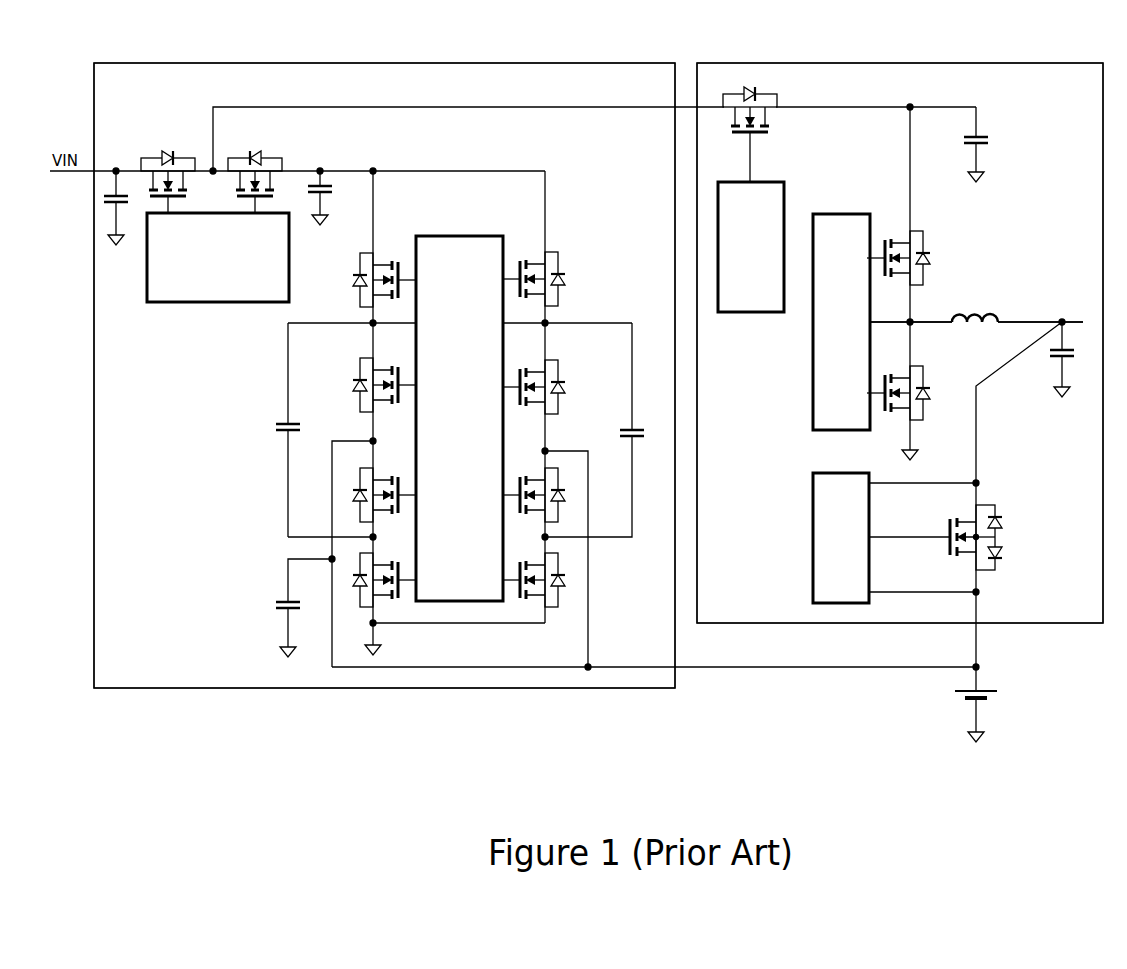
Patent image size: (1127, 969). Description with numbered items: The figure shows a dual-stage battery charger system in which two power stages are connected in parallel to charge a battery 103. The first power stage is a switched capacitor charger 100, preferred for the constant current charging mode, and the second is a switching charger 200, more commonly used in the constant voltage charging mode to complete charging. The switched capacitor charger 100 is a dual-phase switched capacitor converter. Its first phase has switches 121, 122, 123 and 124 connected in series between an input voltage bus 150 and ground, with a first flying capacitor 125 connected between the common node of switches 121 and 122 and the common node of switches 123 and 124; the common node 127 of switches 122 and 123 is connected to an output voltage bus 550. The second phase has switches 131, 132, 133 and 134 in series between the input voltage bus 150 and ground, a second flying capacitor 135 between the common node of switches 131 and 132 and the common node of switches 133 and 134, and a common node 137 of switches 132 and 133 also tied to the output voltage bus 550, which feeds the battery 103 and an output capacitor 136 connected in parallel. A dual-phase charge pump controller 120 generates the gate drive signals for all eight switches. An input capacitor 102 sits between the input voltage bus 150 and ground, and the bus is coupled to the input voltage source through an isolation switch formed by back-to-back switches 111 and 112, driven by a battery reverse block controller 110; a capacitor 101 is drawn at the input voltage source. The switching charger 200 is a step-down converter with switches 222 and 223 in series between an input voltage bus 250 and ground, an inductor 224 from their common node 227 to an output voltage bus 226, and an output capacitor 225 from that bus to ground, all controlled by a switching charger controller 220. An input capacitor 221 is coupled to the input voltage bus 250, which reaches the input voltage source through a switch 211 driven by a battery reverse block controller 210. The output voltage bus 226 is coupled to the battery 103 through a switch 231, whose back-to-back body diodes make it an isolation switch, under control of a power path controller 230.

The switched capacitor charger 100 is at (311, 62).
The switching charger 200 is at (774, 62).
The input capacitor 101 is at (100, 213).
The input capacitor 102 is at (345, 171).
The battery 103 is at (984, 700).
The battery reverse block controller 110 is at (214, 305).
The switch 111 is at (157, 152).
The switch 112 is at (258, 152).
The dual-phase charge pump controller 120 is at (450, 236).
The switch 121 is at (561, 261).
The switch 122 is at (571, 385).
The switch 123 is at (571, 511).
The switch 124 is at (532, 612).
The first flying capacitor 125 is at (636, 428).
The common node 127 is at (550, 450).
The switch 131 is at (346, 291).
The switch 132 is at (353, 395).
The switch 133 is at (355, 511).
The switch 134 is at (404, 612).
The second flying capacitor 135 is at (282, 420).
The output capacitor 136 is at (262, 612).
The common node 137 is at (368, 439).
The input voltage bus 150 is at (429, 171).
The battery reverse block controller 210 is at (774, 182).
The switch 211 is at (776, 110).
The switching charger controller 220 is at (830, 214).
The input capacitor 221 is at (960, 150).
The switch 222 is at (935, 240).
The switch 223 is at (935, 366).
The inductor 224 is at (984, 318).
The output capacitor 225 is at (1030, 368).
The output voltage bus 226 is at (1045, 318).
The common node 227 is at (915, 318).
The power path controller 230 is at (825, 473).
The switch 231 is at (1006, 541).
The input voltage bus 250 is at (860, 107).
The output voltage bus 550 is at (716, 667).